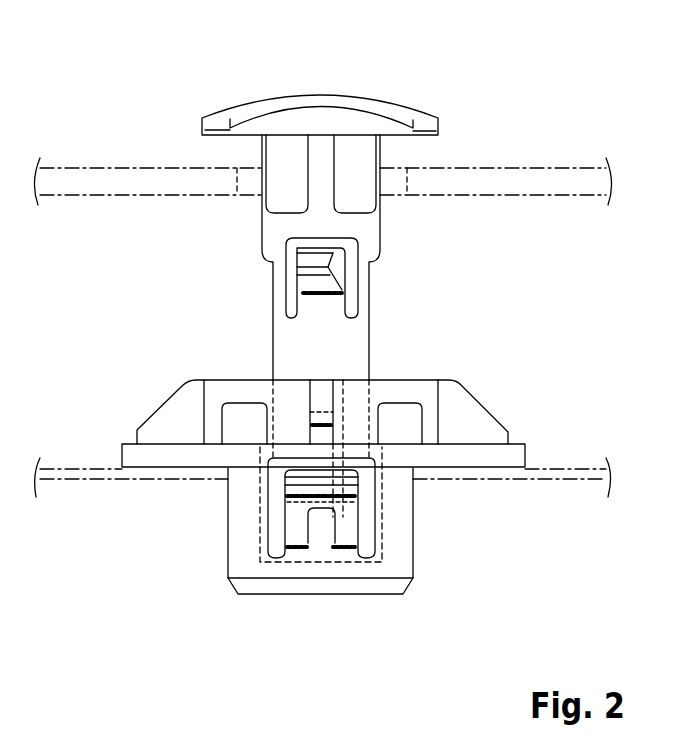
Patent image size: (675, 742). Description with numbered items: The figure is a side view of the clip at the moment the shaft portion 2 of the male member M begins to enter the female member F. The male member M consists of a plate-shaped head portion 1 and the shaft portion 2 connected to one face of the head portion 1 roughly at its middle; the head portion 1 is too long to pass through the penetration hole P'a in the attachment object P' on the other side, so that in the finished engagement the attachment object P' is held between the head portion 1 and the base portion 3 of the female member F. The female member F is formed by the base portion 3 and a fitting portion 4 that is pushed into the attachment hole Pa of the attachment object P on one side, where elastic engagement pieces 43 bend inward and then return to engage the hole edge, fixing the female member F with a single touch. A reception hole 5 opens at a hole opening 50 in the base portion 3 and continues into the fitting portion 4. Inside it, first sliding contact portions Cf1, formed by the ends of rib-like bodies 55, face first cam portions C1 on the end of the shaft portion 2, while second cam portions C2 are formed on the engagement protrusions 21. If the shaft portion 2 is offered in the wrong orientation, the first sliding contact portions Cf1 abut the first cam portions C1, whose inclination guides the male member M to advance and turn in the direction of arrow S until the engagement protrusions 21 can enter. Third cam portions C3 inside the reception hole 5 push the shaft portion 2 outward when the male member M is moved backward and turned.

The head portion 1 is at (343, 100).
The male member M is at (400, 112).
The shaft portion 2 is at (373, 248).
The engagement protrusion 21 is at (297, 276).
The second cam portion C2 is at (337, 274).
The arrow s (turning direction) S is at (333, 352).
The first sliding contact portion Cf1 is at (326, 420).
The first cam portion C1 is at (347, 403).
The hole opening 50 is at (350, 412).
The base portion 3 is at (485, 413).
The attachment object on one side P is at (323, 449).
The attachment hole Pa is at (418, 473).
The attachment object on the other side P' is at (322, 144).
The penetration hole P'a is at (366, 156).
The reception hole 5 is at (372, 506).
The fitting portion 4 is at (407, 568).
The female member F is at (228, 592).
The third cam portion C3 is at (290, 570).
The elastic engagement piece 43 is at (296, 548).
The rib-like body 55 is at (365, 560).